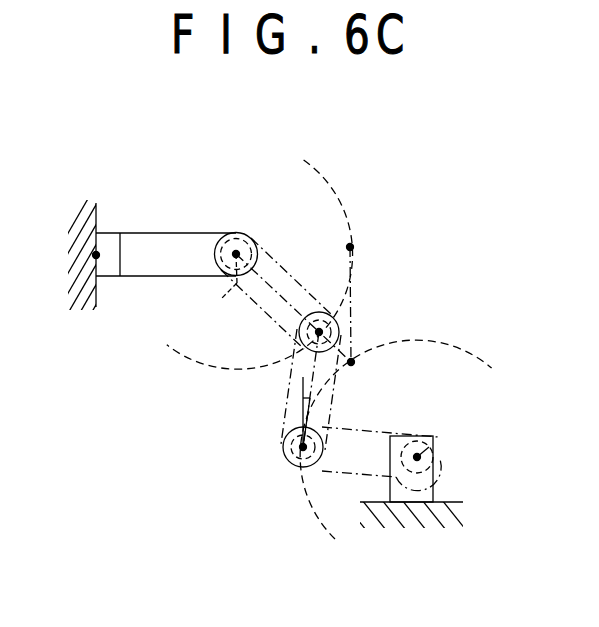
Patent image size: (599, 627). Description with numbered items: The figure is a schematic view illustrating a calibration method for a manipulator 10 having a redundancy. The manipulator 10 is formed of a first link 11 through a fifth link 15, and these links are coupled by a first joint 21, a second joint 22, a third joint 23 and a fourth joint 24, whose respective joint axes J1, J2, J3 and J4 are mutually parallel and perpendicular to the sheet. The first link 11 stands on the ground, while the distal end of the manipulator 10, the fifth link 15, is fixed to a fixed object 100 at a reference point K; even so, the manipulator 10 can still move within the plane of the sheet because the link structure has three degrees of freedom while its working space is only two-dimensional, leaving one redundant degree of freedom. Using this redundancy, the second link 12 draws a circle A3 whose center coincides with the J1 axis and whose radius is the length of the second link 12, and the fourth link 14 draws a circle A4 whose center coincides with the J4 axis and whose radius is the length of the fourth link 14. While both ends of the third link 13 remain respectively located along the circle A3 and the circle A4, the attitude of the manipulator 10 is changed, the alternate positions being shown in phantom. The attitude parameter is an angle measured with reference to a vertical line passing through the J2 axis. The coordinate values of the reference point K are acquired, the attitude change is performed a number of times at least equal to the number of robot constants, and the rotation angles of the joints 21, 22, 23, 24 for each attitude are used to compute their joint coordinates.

The manipulator 10 is at (487, 196).
The first link 11 is at (433, 487).
The second link 12 is at (398, 428).
The third link 13 is at (285, 416).
The fourth link 14 is at (276, 248).
The fifth link 15 is at (174, 243).
The first joint 21 is at (434, 452).
The second joint 22 is at (292, 463).
The third joint 23 is at (333, 328).
The fourth joint 24 is at (218, 296).
The fixed object 100 is at (97, 292).
The J1 axis J1 is at (437, 443).
The J2 axis J2 is at (285, 453).
The J3 axis J3 is at (334, 318).
The J4 axis J4 is at (237, 250).
The reference point K is at (100, 254).
The circle A3 is at (438, 342).
The circle A4 is at (324, 180).